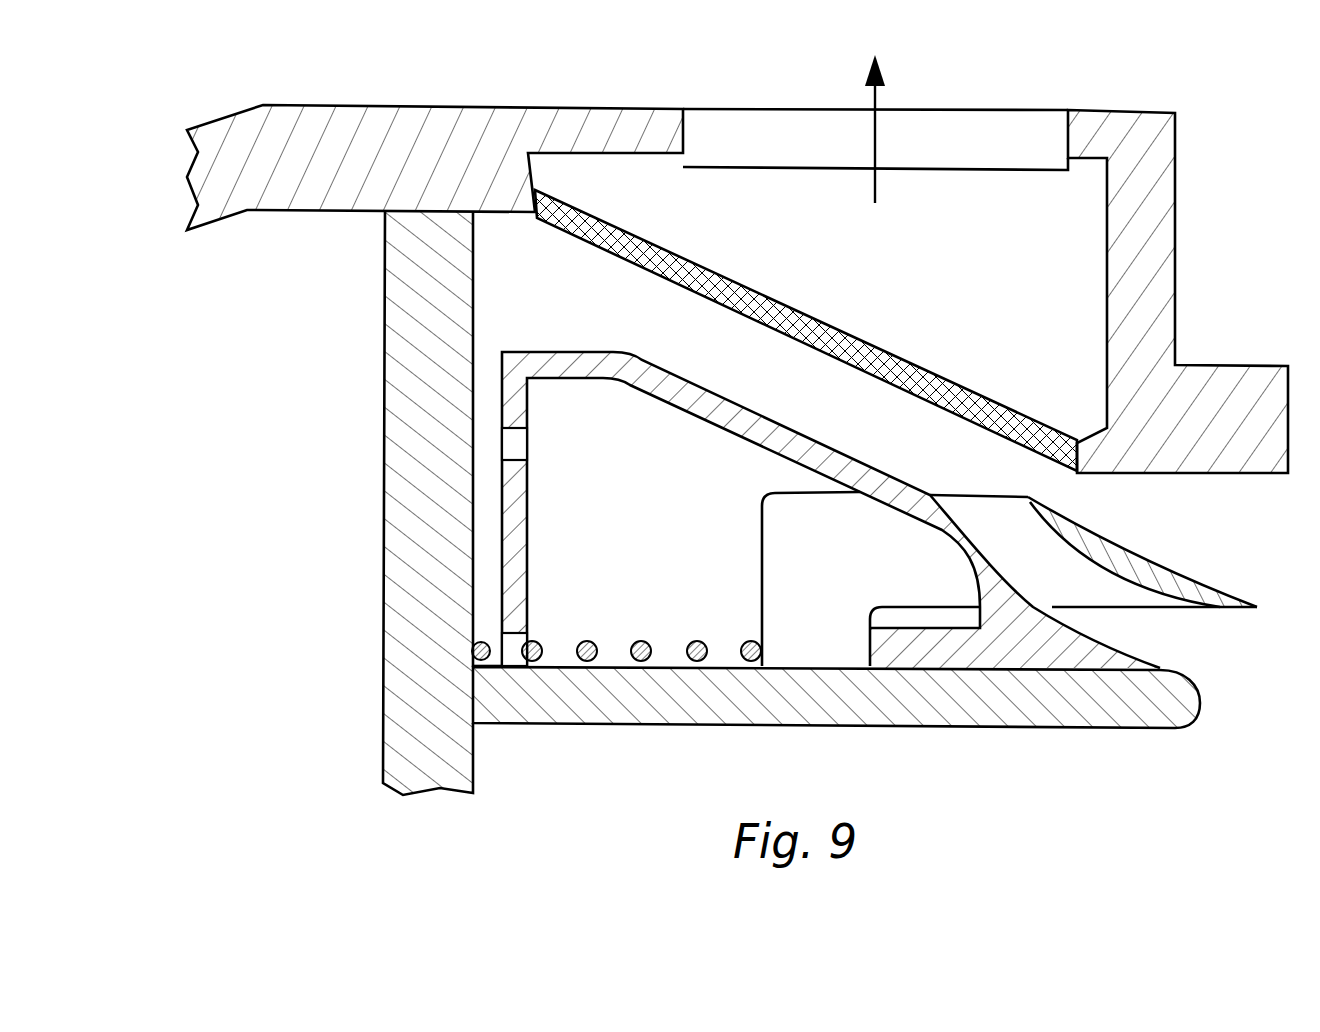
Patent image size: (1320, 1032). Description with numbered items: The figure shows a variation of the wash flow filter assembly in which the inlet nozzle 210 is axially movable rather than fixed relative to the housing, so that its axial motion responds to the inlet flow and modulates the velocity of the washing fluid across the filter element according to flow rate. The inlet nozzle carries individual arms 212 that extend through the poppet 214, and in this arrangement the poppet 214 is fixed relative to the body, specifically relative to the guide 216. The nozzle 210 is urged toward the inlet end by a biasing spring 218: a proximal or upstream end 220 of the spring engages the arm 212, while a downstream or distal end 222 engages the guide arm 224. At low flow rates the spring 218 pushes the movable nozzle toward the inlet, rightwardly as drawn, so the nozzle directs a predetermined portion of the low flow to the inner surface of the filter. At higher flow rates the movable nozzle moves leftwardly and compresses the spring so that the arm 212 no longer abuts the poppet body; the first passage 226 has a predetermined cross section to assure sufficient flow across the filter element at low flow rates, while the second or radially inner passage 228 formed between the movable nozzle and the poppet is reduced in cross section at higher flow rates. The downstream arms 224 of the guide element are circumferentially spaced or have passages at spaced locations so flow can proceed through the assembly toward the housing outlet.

The inlet nozzle 210 is at (1217, 587).
The arm 212 is at (795, 560).
The poppet 214 is at (730, 433).
The guide 216 is at (968, 728).
The spring 218 is at (597, 650).
The upstream end of the spring 220 is at (748, 663).
The downstream end of the spring 222 is at (481, 653).
The guide arm 224 is at (385, 453).
The first passage 226 is at (1078, 502).
The second passage 228 is at (1177, 622).